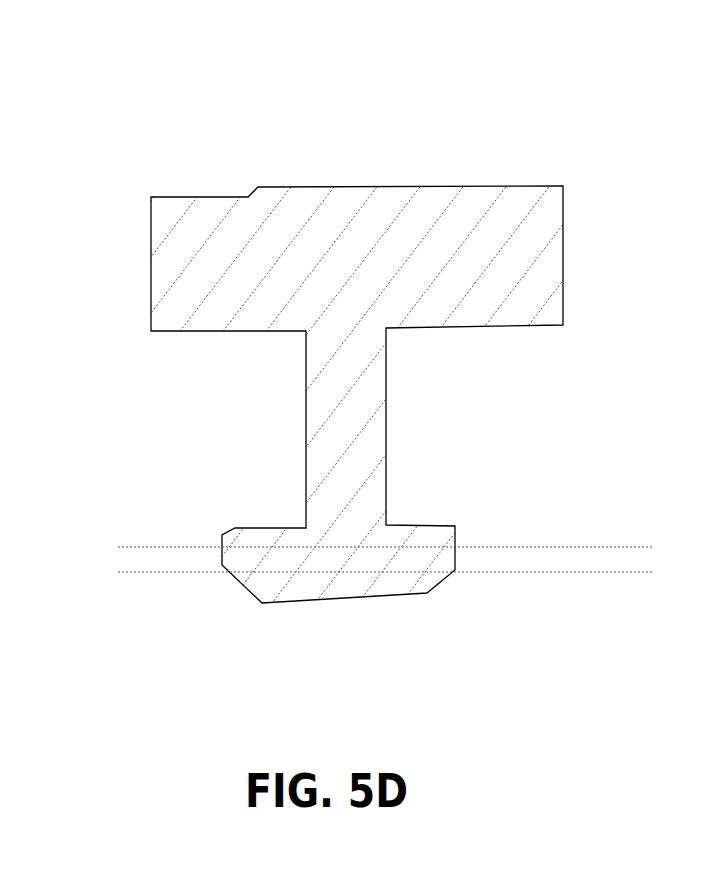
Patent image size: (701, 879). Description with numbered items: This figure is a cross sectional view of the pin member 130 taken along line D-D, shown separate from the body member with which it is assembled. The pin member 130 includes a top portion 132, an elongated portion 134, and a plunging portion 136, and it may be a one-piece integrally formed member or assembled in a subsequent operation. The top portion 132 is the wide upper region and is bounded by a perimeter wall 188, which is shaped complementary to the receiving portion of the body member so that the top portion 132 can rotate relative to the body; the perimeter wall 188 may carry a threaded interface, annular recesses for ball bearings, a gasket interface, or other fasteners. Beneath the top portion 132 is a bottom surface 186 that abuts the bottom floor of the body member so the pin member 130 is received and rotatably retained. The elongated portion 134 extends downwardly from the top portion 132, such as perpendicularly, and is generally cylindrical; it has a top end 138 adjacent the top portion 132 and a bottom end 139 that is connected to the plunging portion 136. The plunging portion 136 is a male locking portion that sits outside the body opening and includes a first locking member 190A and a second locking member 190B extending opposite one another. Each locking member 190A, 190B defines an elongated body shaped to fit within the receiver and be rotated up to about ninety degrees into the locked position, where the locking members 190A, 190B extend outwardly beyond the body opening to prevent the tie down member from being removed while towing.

The pin member 130 is at (277, 104).
The top portion 132 is at (240, 245).
The elongated portion 134 is at (337, 470).
The plunging portion 136 is at (335, 563).
The top end 138 is at (337, 332).
The bottom end 139 is at (345, 520).
The bottom surface 186 is at (476, 325).
The perimeter wall 188 is at (487, 250).
The first locking member 190A is at (220, 545).
The second locking member 190B is at (445, 532).